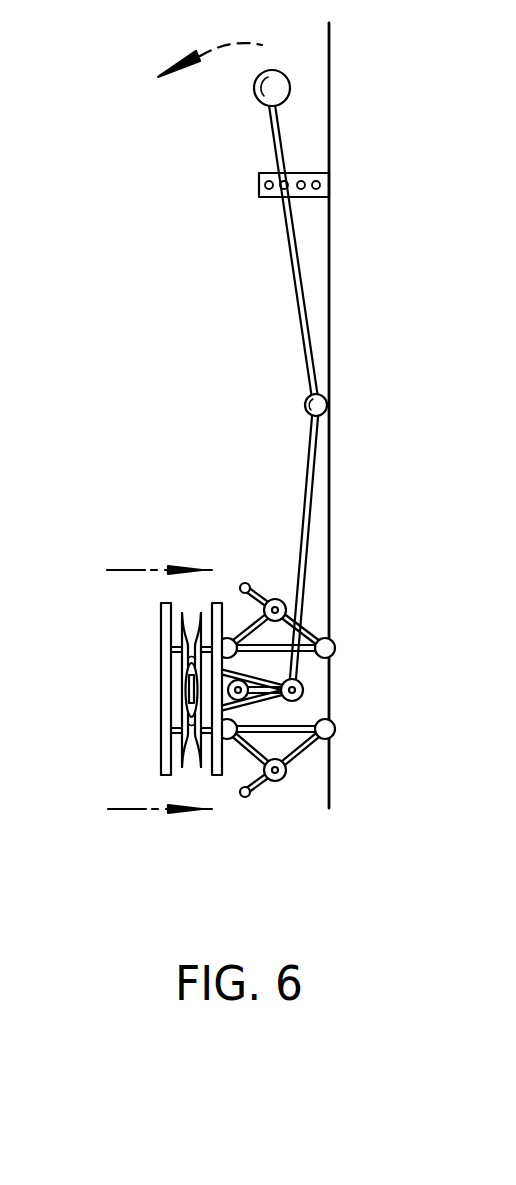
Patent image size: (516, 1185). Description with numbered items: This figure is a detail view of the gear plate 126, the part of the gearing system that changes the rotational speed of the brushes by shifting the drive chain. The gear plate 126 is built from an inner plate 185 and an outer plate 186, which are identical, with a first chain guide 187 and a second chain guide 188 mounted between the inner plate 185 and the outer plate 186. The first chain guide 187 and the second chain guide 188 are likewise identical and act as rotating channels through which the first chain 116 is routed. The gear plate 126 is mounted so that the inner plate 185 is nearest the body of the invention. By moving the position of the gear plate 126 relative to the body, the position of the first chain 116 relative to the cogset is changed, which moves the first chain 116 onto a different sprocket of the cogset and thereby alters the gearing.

The first chain 116 is at (189, 690).
The gear plate 126 is at (161, 624).
The inner plate 185 is at (217, 605).
The outer plate 186 is at (167, 603).
The first chain guide 187 is at (184, 615).
The second chain guide 188 is at (200, 765).